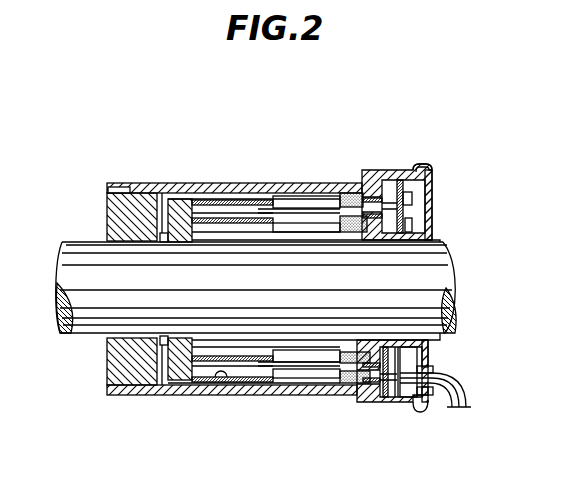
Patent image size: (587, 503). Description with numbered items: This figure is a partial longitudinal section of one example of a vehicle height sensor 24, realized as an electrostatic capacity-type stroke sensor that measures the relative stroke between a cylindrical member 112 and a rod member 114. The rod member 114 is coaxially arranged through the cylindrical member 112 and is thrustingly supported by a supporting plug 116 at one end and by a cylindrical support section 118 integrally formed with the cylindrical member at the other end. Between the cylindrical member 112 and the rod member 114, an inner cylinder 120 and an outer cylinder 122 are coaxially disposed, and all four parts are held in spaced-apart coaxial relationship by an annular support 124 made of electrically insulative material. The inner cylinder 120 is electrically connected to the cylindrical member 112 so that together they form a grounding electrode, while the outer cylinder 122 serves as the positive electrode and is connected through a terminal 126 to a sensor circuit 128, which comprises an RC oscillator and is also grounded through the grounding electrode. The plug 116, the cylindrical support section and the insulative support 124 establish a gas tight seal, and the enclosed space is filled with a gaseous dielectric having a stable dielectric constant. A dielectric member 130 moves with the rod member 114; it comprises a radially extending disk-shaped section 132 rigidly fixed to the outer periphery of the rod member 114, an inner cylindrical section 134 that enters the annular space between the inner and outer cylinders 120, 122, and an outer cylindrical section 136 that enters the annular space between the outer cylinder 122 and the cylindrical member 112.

The height sensor 24 is at (338, 147).
The cylindrical member 112 is at (229, 186).
The rod member 114 is at (447, 267).
The supporting plug 116 is at (107, 360).
The cylindrical support section 118 is at (423, 228).
The inner cylinder 120 is at (330, 231).
The outer cylinder 122 is at (297, 199).
The annular support 124 is at (353, 184).
The terminal 126 is at (386, 182).
The sensor circuit 128 is at (408, 197).
The dielectric member 130 is at (187, 387).
The disk-shaped section 132 is at (167, 188).
The inner cylindrical section 134 is at (243, 223).
The outer cylindrical section 136 is at (228, 382).